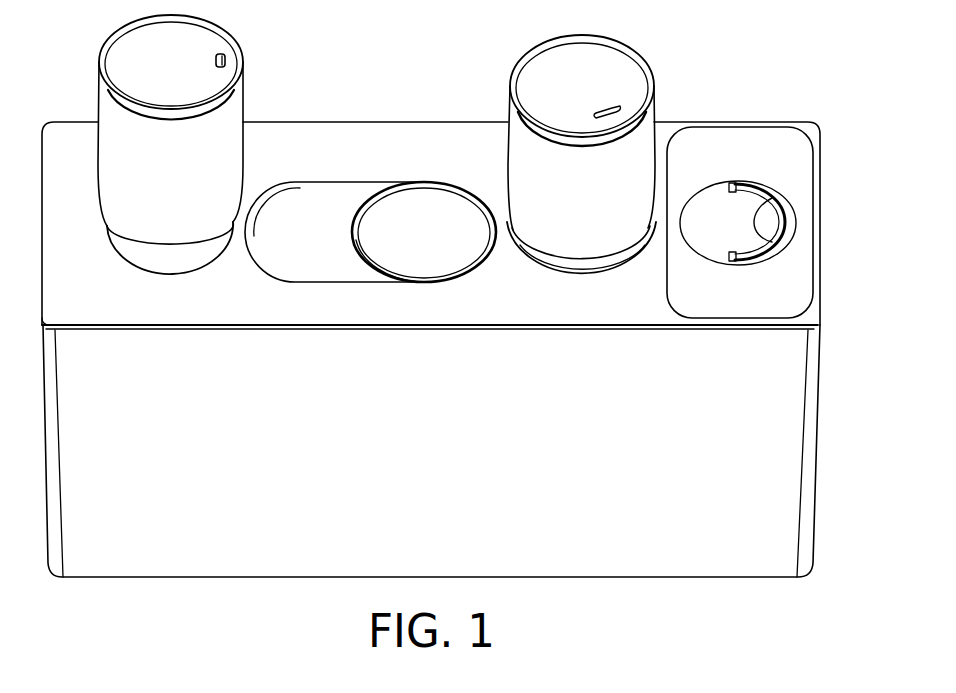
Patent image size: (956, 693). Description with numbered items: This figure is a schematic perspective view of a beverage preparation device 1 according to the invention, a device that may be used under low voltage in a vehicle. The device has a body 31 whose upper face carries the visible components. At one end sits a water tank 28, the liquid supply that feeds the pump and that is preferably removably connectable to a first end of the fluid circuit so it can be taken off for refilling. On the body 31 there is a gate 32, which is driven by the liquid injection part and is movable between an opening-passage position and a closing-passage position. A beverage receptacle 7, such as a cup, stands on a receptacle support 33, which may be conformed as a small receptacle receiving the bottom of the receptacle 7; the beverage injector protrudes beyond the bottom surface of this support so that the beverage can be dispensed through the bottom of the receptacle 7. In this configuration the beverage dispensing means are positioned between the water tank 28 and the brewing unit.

The beverage preparation device 1 is at (469, 294).
The beverage receptacle 7 is at (609, 196).
The water tank 28 is at (783, 133).
The body 31 is at (293, 132).
The gate 32 is at (428, 190).
The receptacle support 33 is at (573, 273).